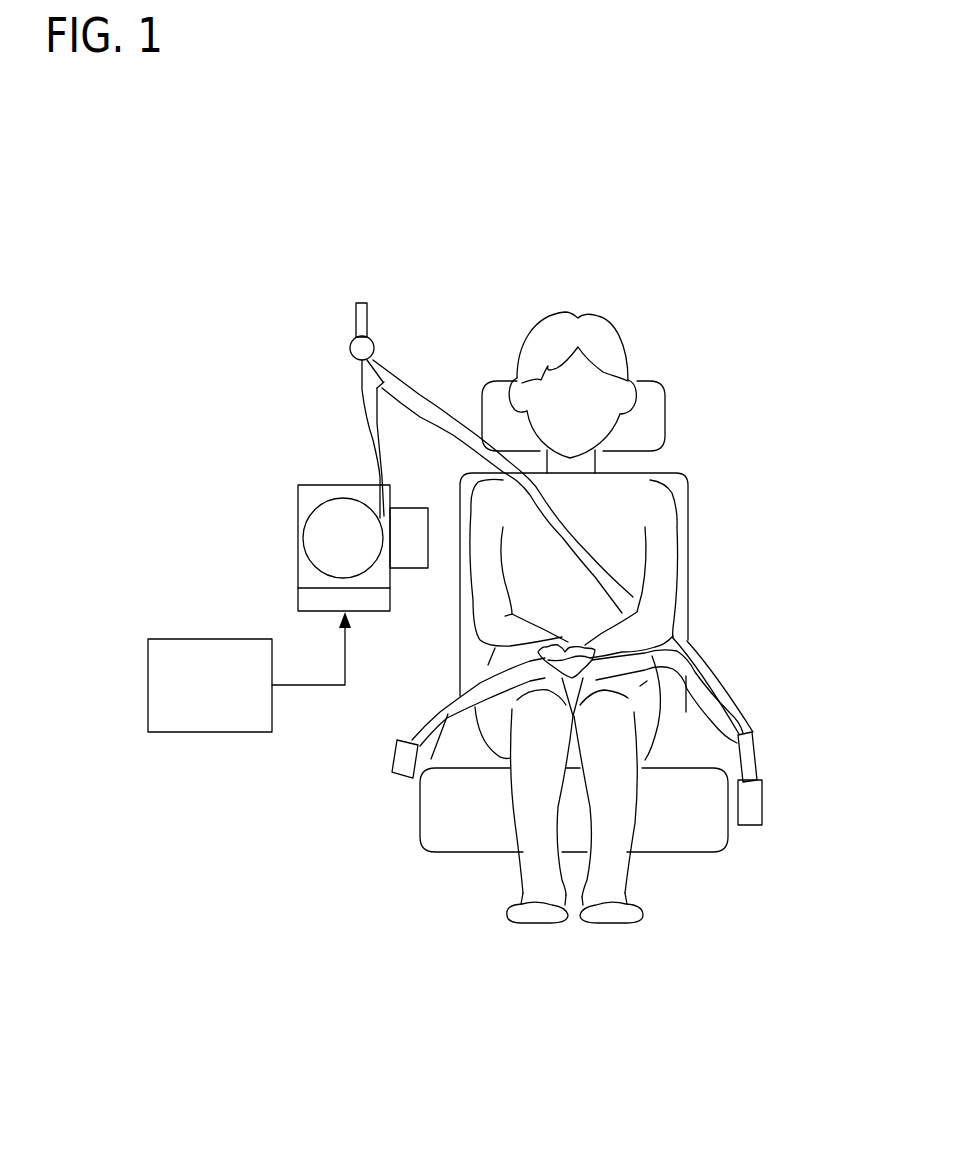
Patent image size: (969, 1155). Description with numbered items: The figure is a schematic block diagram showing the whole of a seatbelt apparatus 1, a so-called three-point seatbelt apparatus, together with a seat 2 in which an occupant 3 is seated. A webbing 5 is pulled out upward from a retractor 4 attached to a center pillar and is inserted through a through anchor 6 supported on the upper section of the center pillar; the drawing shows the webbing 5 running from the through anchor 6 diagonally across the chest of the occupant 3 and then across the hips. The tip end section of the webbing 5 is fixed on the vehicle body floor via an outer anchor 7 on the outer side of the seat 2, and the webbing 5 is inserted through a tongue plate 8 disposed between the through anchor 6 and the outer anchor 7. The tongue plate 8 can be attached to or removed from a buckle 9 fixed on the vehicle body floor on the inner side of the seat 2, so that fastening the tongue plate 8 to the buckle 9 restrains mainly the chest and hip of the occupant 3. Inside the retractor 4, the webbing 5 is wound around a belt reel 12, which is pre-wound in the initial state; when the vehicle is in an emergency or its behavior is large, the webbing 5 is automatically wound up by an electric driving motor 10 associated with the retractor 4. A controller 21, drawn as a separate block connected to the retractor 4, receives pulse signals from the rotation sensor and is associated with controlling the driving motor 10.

The seatbelt apparatus 1 is at (423, 309).
The seat 2 is at (687, 827).
The occupant 3 is at (617, 330).
The retractor 4 is at (314, 558).
The webbing 5 is at (715, 684).
The through anchor 6 is at (360, 370).
The outer anchor 7 is at (397, 757).
The tongue plate 8 is at (757, 768).
The buckle 9 is at (750, 802).
The driving motor 10 is at (375, 600).
The belt reel 12 is at (327, 542).
The controller 21 is at (212, 720).